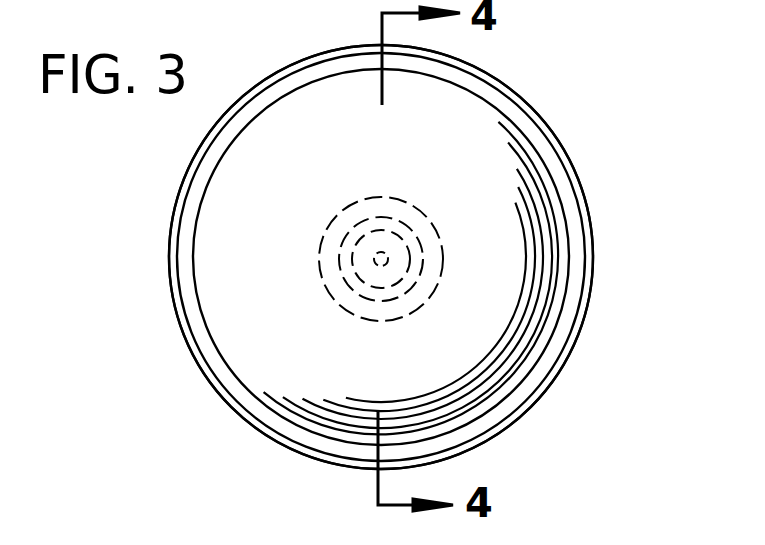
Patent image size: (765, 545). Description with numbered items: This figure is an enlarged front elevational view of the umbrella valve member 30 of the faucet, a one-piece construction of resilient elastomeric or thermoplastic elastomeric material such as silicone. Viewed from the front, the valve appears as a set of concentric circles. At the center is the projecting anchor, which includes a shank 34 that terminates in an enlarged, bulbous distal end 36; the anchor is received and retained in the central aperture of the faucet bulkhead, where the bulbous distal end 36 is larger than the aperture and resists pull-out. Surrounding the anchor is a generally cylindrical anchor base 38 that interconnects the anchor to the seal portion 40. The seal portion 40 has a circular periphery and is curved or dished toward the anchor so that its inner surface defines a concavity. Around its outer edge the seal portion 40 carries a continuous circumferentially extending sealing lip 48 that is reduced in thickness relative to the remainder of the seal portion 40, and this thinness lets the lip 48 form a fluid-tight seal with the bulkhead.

The umbrella valve member 30 is at (550, 105).
The shank 34 is at (338, 268).
The bulbous distal end 36 is at (338, 226).
The anchor base 38 is at (432, 202).
The seal portion 40 is at (530, 368).
The sealing lip 48 is at (224, 425).